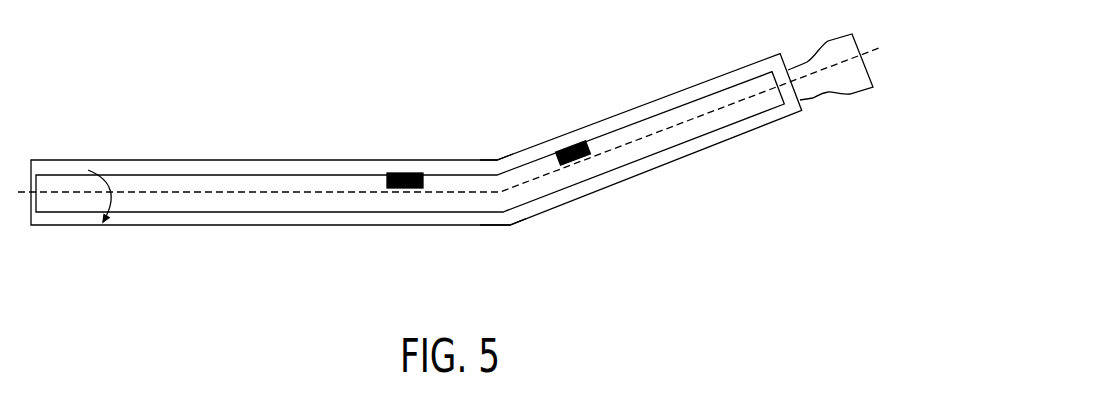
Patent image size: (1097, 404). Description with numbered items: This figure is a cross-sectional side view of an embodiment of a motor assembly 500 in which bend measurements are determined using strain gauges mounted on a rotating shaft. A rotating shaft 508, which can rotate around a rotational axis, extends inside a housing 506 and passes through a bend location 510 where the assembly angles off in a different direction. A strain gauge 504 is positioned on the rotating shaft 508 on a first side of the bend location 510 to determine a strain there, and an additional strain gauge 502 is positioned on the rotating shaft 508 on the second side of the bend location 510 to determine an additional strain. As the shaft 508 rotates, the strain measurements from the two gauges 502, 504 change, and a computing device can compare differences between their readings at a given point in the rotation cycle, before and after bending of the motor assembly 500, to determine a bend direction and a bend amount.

The motor assembly 500 is at (92, 150).
The additional strain gauge 502 is at (403, 171).
The strain gauge 504 is at (578, 144).
The housing 506 is at (336, 227).
The rotating shaft 508 is at (160, 214).
The bend location 510 is at (511, 227).